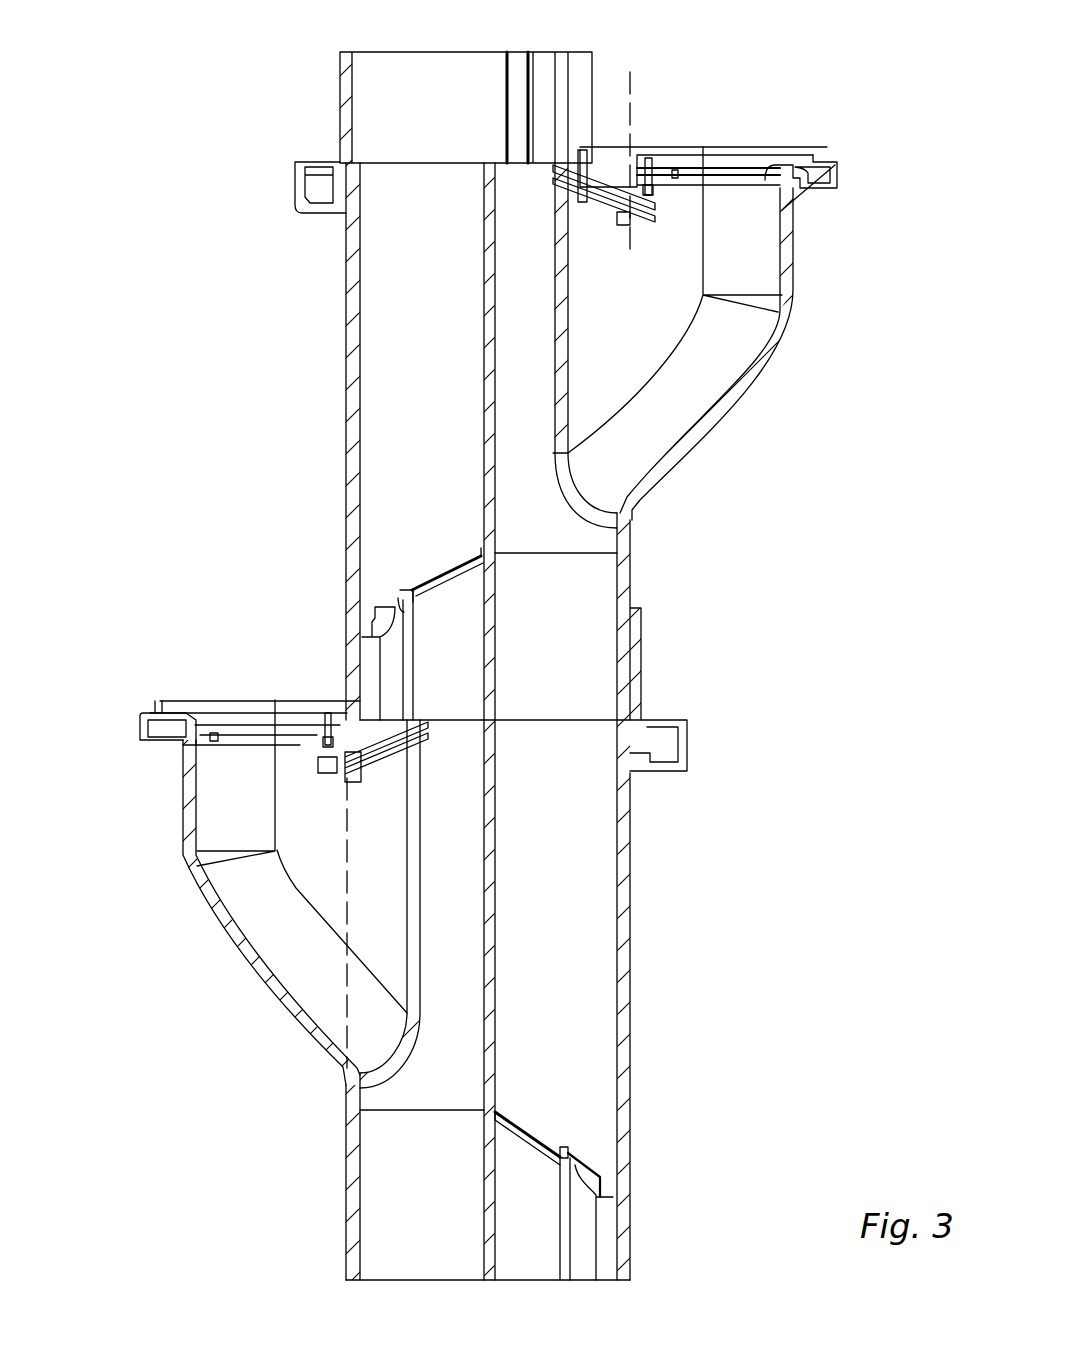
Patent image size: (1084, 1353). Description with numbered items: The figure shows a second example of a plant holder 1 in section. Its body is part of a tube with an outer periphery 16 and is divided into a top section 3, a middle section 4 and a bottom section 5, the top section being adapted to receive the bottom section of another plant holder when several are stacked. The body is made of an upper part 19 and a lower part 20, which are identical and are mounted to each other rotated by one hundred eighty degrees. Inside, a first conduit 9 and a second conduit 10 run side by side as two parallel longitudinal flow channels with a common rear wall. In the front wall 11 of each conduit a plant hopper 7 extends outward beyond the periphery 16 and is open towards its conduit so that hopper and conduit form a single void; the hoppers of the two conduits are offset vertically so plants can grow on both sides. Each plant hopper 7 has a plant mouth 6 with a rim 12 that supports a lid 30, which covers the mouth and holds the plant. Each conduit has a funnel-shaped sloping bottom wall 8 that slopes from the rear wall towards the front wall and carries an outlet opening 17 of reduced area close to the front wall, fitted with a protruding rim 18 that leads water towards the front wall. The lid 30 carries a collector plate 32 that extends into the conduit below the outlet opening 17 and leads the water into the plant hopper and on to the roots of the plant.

The plant holder 1 is at (866, 67).
The top section 3 is at (902, 203).
The middle section 4 is at (777, 715).
The bottom section 5 is at (695, 1243).
The plant mouth 6 is at (768, 116).
The plant hopper 7 is at (707, 390).
The sloping bottom wall 8 is at (440, 587).
The first conduit 9 is at (583, 913).
The second conduit 10 is at (393, 393).
The front wall 11 is at (355, 478).
The rim 12 is at (498, 843).
The outer periphery 16 is at (630, 425).
The outlet opening 17 is at (400, 597).
The protruding rim 18 is at (398, 604).
The upper part 19 is at (794, 518).
The lower part 20 is at (740, 1088).
The lid 30 is at (837, 163).
The collector plate 32 is at (583, 192).